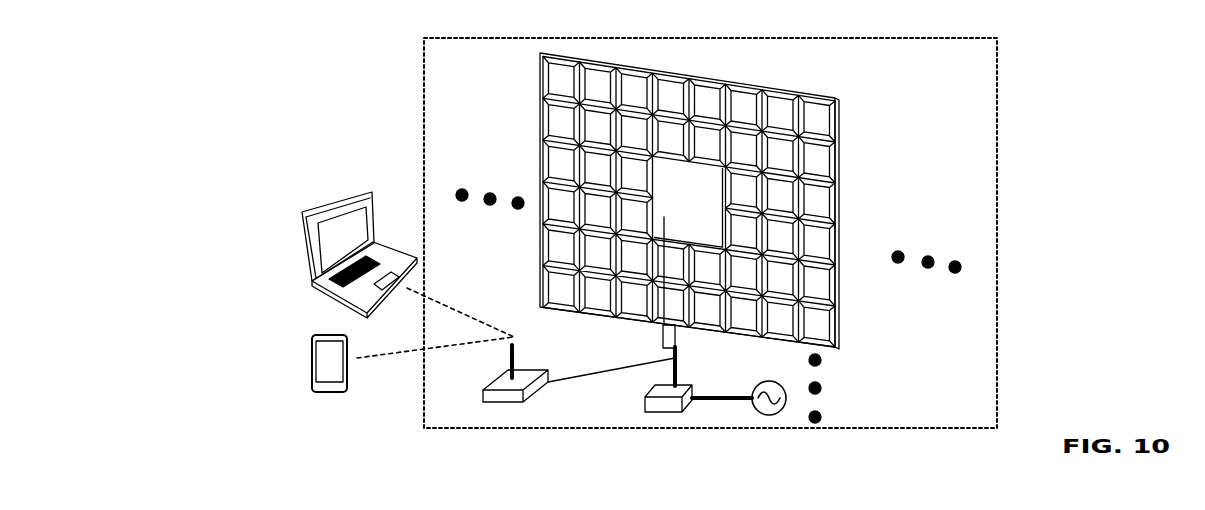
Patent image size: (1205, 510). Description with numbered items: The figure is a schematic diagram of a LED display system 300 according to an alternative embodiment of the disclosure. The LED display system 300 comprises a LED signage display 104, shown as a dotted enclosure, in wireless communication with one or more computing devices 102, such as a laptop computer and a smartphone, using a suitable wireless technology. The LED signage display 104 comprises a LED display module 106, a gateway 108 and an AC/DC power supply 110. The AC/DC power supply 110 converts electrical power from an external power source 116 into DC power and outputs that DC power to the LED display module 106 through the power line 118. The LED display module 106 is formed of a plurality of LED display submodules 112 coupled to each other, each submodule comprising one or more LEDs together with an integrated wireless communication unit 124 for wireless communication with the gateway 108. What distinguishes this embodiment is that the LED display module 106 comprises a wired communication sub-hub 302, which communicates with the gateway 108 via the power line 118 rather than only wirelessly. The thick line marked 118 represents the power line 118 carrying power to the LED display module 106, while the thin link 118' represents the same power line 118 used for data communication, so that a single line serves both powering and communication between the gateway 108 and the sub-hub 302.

The LED display system 300 is at (192, 116).
The LED signage display 104 is at (424, 74).
The LED display module 106 is at (838, 102).
The LED display submodule 112 is at (815, 240).
The wireless communication unit 124 is at (548, 73).
The wired communication sub-hub 302 is at (678, 180).
The power line 118 is at (713, 366).
The wire connector 118' is at (633, 283).
The AC/DC power supply 110 is at (682, 412).
The external power source 116 is at (769, 415).
The gateway 108 is at (483, 395).
The computing device 102 is at (303, 237).